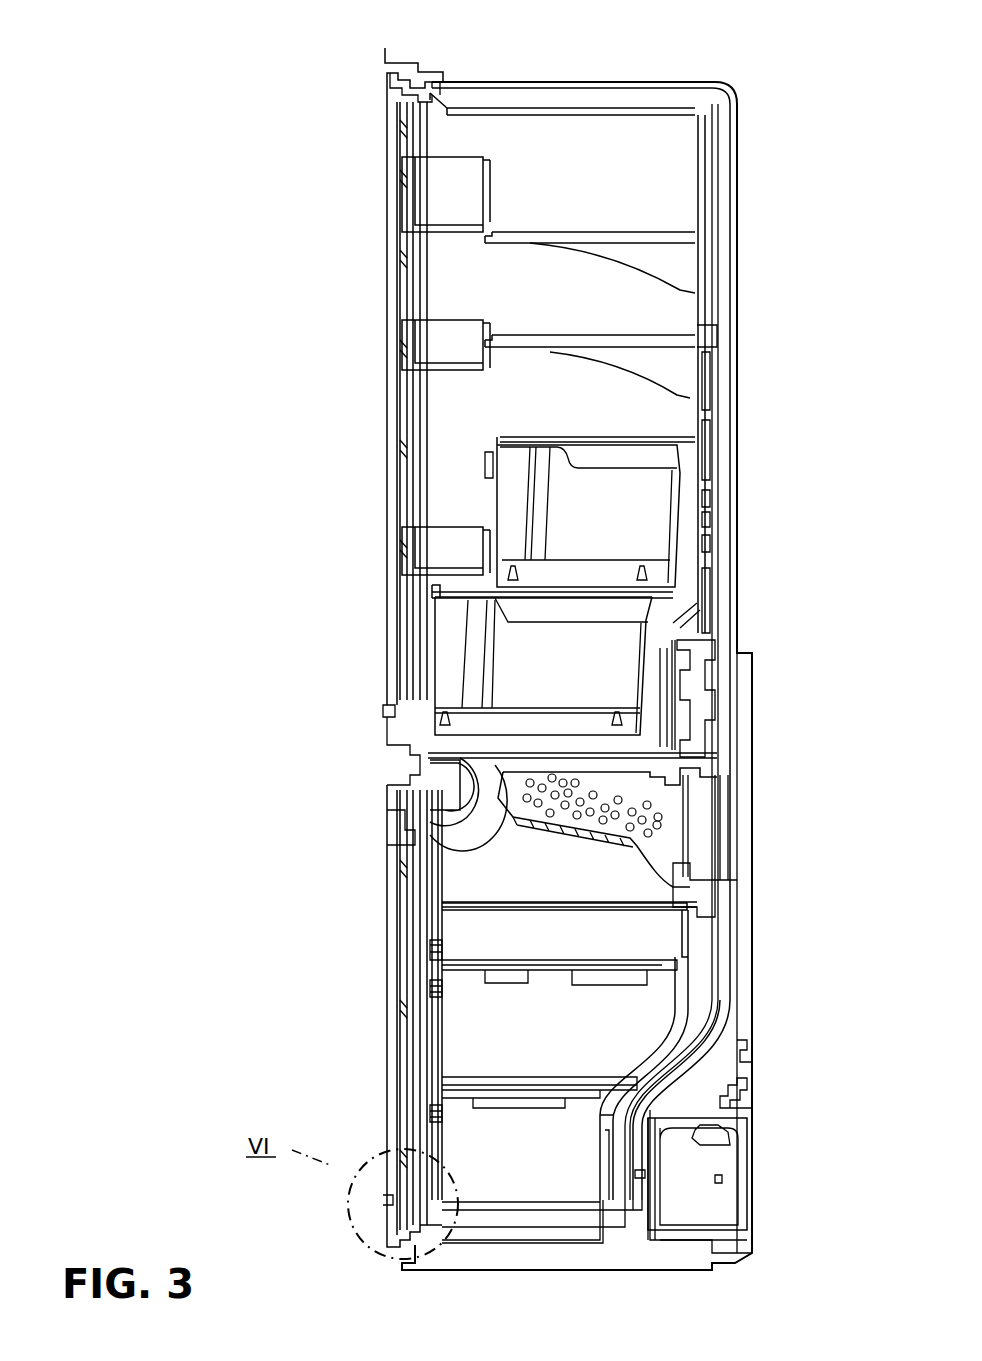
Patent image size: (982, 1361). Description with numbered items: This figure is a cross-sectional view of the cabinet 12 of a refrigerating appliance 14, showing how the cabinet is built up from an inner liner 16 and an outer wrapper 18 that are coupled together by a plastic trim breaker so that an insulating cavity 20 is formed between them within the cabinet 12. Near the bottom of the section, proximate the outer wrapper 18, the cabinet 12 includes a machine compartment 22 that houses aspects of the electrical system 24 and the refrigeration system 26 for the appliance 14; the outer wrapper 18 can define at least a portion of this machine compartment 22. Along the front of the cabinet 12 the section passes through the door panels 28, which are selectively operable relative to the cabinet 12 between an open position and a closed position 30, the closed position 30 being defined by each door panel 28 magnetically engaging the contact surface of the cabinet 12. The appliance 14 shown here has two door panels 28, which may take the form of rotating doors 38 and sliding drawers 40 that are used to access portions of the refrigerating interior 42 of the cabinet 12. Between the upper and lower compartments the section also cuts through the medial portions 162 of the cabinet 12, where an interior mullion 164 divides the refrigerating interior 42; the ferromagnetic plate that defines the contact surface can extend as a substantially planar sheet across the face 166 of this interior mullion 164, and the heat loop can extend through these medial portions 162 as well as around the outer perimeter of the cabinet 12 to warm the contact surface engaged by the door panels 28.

The cabinet 12 is at (752, 362).
The appliance 14 is at (322, 84).
The inner liner 16 is at (657, 152).
The outer wrapper 18 is at (490, 82).
The insulating cavity 20 is at (613, 100).
The machine compartment 22 is at (748, 1106).
The electrical system 24 is at (722, 1090).
The refrigeration system 26 is at (712, 1183).
The door panel 28 is at (382, 402).
The closed position 30 is at (370, 1017).
The rotating doors 38 is at (393, 290).
The sliding drawers 40 is at (382, 915).
The refrigerating interior 42 is at (598, 286).
The medial portions 162 is at (588, 728).
The interior mullion 164 is at (382, 779).
The face 166 is at (413, 795).